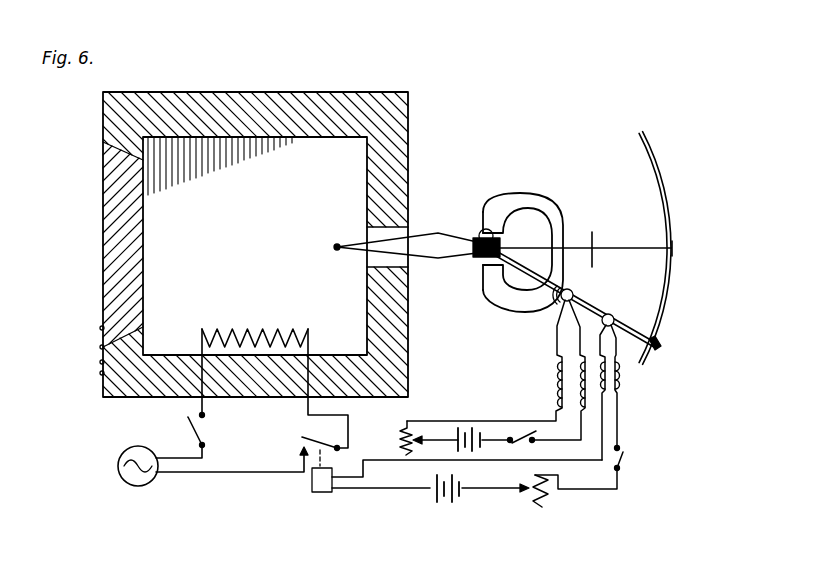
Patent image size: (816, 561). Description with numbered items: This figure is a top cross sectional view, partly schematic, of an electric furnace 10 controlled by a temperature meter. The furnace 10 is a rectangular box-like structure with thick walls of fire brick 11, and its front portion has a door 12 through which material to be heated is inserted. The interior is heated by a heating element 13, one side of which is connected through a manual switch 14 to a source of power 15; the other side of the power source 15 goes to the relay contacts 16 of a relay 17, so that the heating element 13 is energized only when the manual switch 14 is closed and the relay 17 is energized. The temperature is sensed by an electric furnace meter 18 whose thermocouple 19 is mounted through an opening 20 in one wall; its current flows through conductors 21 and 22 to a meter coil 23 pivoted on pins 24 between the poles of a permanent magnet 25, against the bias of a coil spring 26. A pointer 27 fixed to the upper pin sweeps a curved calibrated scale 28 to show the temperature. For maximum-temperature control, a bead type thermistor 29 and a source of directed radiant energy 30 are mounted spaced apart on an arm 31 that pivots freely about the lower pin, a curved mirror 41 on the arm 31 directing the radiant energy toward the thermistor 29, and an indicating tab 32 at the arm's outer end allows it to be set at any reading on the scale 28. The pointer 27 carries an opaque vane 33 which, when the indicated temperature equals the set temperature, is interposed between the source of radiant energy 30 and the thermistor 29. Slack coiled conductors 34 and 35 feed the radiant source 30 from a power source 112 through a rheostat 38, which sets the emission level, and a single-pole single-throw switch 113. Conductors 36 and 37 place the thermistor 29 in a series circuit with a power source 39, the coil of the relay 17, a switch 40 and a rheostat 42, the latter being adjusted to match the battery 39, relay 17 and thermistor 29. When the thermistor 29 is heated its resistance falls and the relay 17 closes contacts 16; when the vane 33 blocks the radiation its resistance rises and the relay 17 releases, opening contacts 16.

The electric furnace 10 is at (286, 88).
The fire brick 11 is at (204, 110).
The door 12 is at (110, 263).
The heating element 13 is at (237, 326).
The manual switch 14 is at (187, 419).
The source of power 15 is at (121, 453).
The relay contacts 16 is at (300, 452).
The relay 17 is at (314, 491).
The electric furnace meter 18 is at (467, 216).
The thermocouple 19 is at (337, 244).
The opening 20 is at (409, 284).
The conductor 21 is at (448, 233).
The conductor 22 is at (457, 259).
The meter coil 23 is at (495, 241).
The pivot pins 24 is at (504, 215).
The permanent magnet 25 is at (553, 207).
The coil spring 26 is at (481, 228).
The pointer 27 is at (592, 231).
The calibrated scale 28 is at (664, 208).
The bead type thermistor 29 is at (611, 313).
The source of directed radiant energy 30 is at (573, 292).
The arm 31 is at (632, 327).
The indicating tab 32 is at (659, 341).
The opaque vane 33 is at (598, 238).
The conductor 34 is at (557, 346).
The conductor 35 is at (556, 331).
The conductor 36 is at (603, 399).
The conductor 37 is at (620, 418).
The rheostat 38 is at (402, 437).
The power source 39 is at (440, 505).
The switch 40 is at (629, 463).
The curved mirror 41 is at (564, 285).
The rheostat 42 is at (545, 505).
The power source 112 is at (456, 428).
The single-pole single-throw switch 113 is at (539, 432).